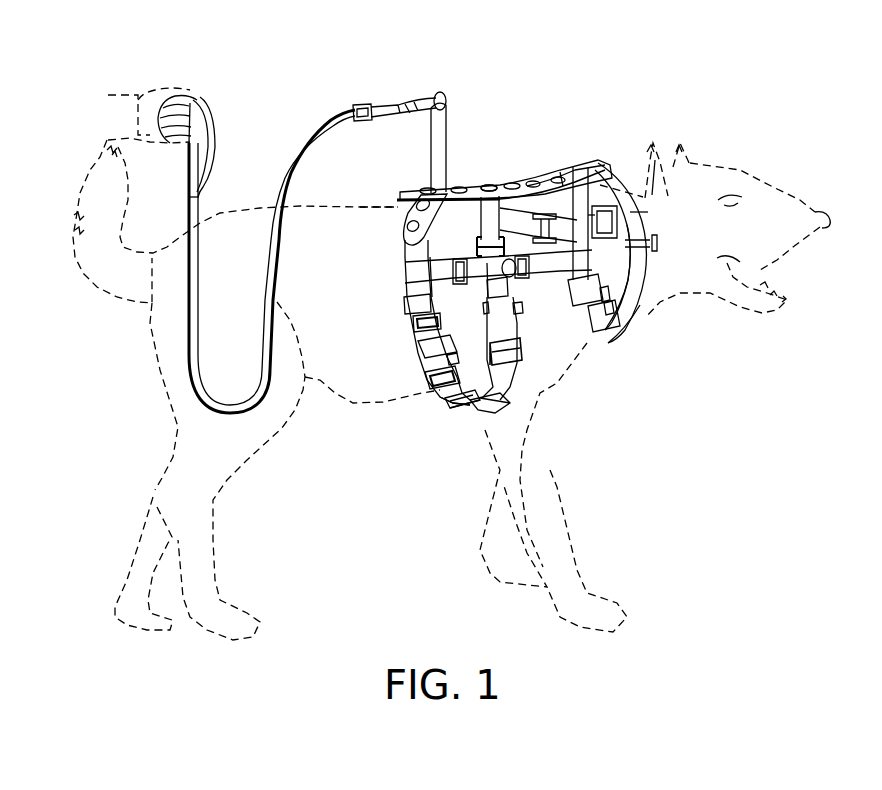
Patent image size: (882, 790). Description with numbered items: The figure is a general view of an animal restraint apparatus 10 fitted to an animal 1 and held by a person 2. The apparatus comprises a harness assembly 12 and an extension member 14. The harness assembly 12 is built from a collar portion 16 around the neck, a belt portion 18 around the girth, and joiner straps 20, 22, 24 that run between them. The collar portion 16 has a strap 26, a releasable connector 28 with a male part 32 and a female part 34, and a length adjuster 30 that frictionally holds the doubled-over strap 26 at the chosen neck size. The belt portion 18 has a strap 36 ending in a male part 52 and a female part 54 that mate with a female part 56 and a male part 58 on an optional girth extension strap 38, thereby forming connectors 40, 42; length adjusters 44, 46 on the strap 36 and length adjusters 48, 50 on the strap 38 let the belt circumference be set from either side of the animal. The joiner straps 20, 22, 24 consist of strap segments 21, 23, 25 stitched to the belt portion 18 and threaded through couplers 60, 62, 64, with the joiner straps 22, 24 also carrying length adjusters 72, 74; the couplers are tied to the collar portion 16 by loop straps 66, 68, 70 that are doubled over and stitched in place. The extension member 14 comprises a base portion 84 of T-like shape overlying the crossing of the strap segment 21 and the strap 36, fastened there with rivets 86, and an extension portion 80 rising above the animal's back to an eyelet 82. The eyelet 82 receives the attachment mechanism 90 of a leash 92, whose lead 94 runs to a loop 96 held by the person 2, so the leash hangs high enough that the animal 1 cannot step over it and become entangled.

The animal 1 is at (803, 187).
The person 2 is at (112, 68).
The animal restraint apparatus 10 is at (505, 246).
The harness assembly 12 is at (505, 253).
The extension member 14 is at (443, 110).
The collar portion 16 is at (622, 288).
The belt portion 18 is at (410, 320).
The joiner strap 20 is at (504, 140).
The strap segment 21 is at (510, 178).
The joiner strap 22 is at (403, 300).
The strap segment 23 is at (402, 270).
The joiner strap 24 is at (523, 224).
The strap segment 25 is at (510, 182).
The strap 26 is at (648, 214).
The connector 28 is at (590, 302).
The length adjuster 30 is at (560, 258).
The male part 32 is at (620, 310).
The female part 34 is at (628, 312).
The strap 36 is at (398, 250).
The girth extension strap 38 is at (455, 415).
The connector 40 is at (398, 386).
The connector 42 is at (528, 345).
The length adjuster 44 is at (415, 345).
The length adjuster 46 is at (473, 245).
The length adjuster 48 is at (455, 430).
The length adjuster 50 is at (500, 425).
The male part 52 is at (548, 322).
The female part 54 is at (415, 393).
The female part 56 is at (530, 368).
The male part 58 is at (437, 405).
The coupler 60 is at (583, 162).
The coupler 62 is at (527, 283).
The coupler 64 is at (638, 210).
The loop strap 66 is at (605, 200).
The loop strap 68 is at (630, 307).
The loop strap 70 is at (657, 244).
The length adjuster 72 is at (466, 298).
The length adjuster 74 is at (553, 210).
The extension portion 80 is at (420, 148).
The eyelet 82 is at (447, 93).
The base portion 84 is at (383, 212).
The rivets 86 is at (447, 187).
The attachment mechanism 90 is at (387, 93).
The leash 92 is at (297, 214).
The lead 94 is at (283, 138).
The loop 96 is at (193, 82).